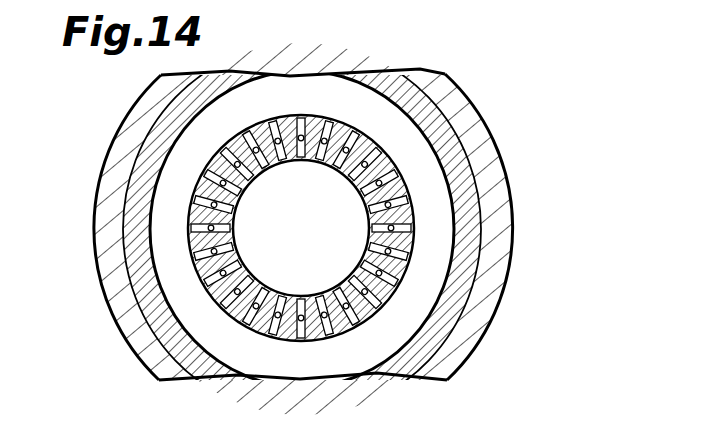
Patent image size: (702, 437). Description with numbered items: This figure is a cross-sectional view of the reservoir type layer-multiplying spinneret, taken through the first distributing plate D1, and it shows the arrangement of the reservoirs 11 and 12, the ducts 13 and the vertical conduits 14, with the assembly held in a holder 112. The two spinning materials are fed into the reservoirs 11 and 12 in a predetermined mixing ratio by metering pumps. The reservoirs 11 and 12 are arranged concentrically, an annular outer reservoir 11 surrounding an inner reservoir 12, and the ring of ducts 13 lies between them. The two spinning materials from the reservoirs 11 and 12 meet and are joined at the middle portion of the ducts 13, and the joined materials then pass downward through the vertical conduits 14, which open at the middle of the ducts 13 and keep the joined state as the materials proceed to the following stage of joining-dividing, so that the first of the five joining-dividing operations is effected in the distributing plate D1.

The reservoir 11 is at (242, 97).
The holder 112 is at (458, 355).
The reservoir 12 is at (268, 197).
The ducts 13 is at (303, 138).
The vertical conduits 14 is at (332, 133).
The distributing plate D1 is at (388, 80).